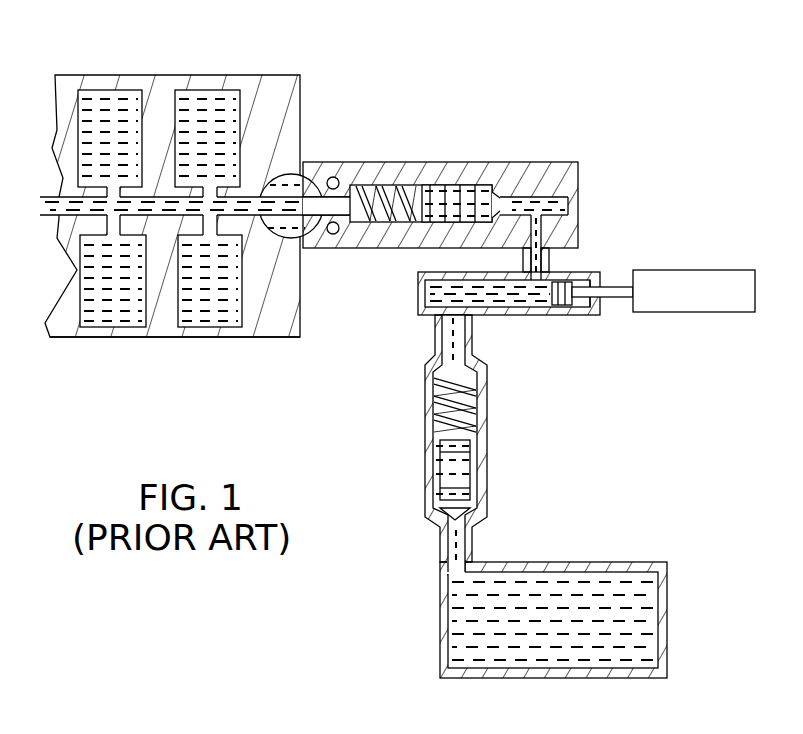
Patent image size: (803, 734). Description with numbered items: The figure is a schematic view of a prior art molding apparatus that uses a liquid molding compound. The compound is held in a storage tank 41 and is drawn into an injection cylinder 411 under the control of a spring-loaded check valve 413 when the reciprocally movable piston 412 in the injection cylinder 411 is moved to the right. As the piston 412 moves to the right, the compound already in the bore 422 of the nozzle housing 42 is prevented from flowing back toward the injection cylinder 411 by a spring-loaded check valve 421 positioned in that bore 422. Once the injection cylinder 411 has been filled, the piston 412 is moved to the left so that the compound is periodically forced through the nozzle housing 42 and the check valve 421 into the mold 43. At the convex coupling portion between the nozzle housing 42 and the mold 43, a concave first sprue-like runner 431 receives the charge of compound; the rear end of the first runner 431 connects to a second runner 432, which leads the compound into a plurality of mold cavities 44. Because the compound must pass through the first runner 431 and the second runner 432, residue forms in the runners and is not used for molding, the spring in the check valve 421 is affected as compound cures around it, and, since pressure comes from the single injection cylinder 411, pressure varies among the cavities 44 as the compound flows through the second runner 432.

The storage tank 41 is at (460, 628).
The injection cylinder 411 is at (551, 324).
The piston 412 is at (565, 300).
The check valve 413 is at (450, 480).
The nozzle housing 42 is at (440, 200).
The spring-loaded check valve 421 is at (466, 194).
The bore 422 is at (523, 170).
The mold 43 is at (209, 207).
The first runner 431 is at (312, 166).
The second runner 432 is at (262, 223).
The mold cavities 44 is at (118, 102).